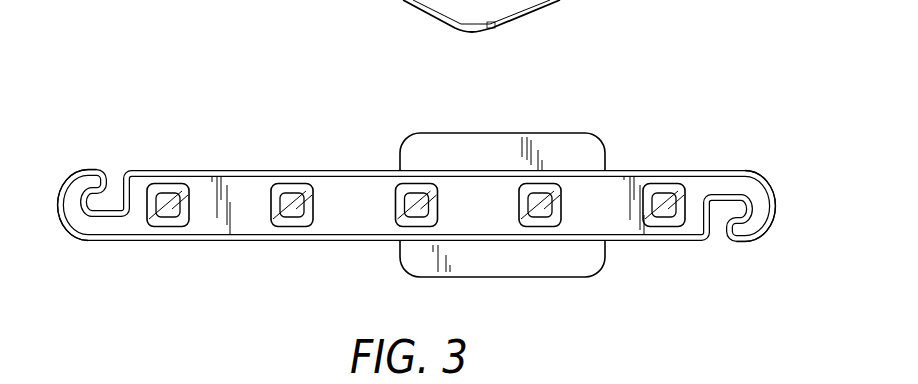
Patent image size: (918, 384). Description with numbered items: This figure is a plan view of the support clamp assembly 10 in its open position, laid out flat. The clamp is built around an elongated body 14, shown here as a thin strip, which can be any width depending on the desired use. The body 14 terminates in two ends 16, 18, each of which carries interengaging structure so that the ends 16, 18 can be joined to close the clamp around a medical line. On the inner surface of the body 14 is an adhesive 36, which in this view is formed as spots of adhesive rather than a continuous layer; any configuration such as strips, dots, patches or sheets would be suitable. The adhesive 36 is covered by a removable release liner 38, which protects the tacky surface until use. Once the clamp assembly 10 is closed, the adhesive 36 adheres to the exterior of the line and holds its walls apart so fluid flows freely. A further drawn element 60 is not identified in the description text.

The hanger assembly 10 is at (418, 159).
The elongated body strip 14 is at (262, 231).
The first hook end 16 is at (62, 192).
The second hook end 18 is at (773, 206).
The inner boss 36 is at (165, 192).
The outer boss 38 is at (171, 215).
The clip 60 is at (568, 133).